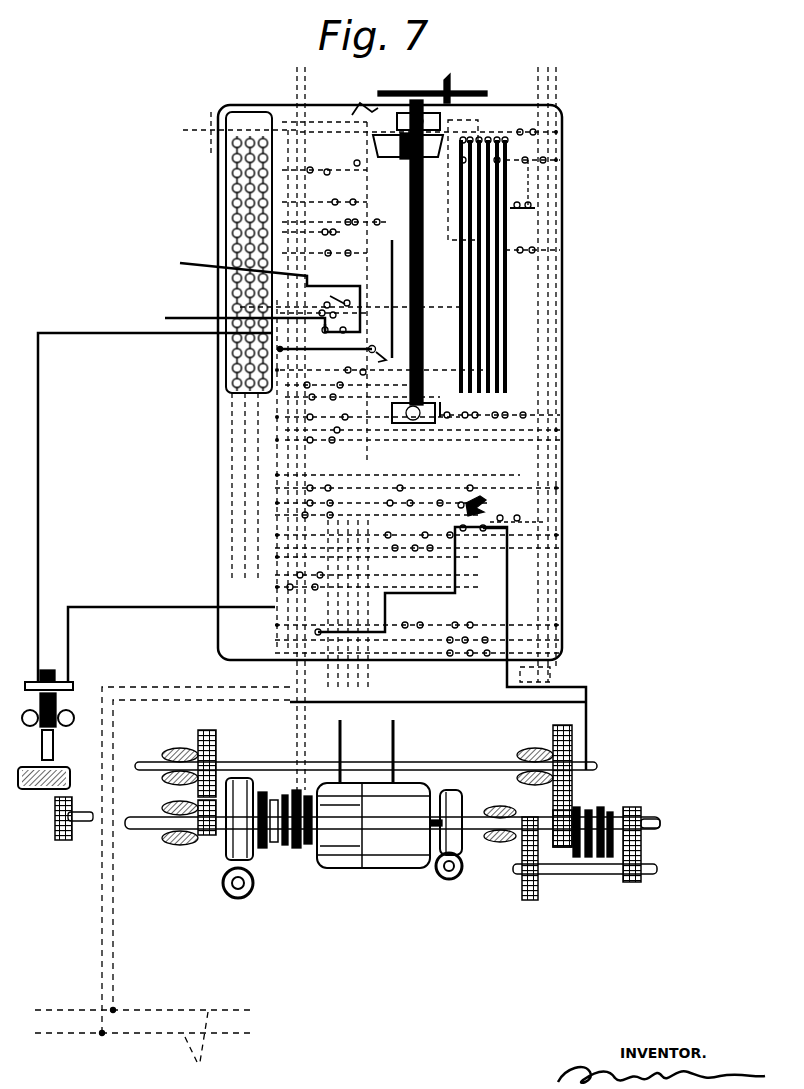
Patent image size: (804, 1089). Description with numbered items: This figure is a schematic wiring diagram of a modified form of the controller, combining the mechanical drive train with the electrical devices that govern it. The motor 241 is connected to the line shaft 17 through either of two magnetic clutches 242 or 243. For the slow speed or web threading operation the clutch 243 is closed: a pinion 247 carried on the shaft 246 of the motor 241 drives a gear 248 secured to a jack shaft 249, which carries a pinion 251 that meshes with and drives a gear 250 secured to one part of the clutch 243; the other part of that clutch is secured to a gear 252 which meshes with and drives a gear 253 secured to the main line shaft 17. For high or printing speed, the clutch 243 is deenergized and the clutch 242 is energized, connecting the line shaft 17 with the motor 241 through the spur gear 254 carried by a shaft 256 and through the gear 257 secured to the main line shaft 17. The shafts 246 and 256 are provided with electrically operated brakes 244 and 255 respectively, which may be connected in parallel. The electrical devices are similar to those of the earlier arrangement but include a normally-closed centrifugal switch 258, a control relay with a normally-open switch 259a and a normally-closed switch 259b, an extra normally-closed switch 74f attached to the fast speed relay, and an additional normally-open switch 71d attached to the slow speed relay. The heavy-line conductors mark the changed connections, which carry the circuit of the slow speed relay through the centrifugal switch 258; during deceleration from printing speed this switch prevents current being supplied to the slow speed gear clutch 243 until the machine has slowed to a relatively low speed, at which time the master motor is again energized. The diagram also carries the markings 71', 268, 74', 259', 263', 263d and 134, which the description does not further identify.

The relay coil 71' is at (220, 252).
The relay 268 is at (249, 292).
The relay contact 74' is at (261, 294).
The normally-closed switch 74f is at (239, 321).
The switch contact 259' is at (252, 371).
The normally-open switch 259a is at (584, 188).
The normally-closed switch 259b is at (463, 425).
The switch arm 263' is at (554, 487).
The normally-open switch 71d is at (495, 522).
The switch contact 263d is at (473, 532).
The centrifugal switch 258 is at (60, 708).
The line shaft 17 is at (490, 768).
The gear 257 is at (215, 778).
The shaft 256 is at (177, 822).
The spur gear 254 is at (210, 834).
The brake 255 is at (222, 862).
The magnetic clutch 242 is at (258, 852).
The motor 241 is at (405, 826).
The brake 244 is at (438, 846).
The shaft 246 is at (493, 843).
The pinion 247 is at (518, 842).
The gear 248 is at (530, 900).
The gear 253 is at (570, 748).
The gear 252 is at (557, 840).
The jack shaft 249 is at (580, 870).
The gear 250 is at (640, 812).
The magnetic clutch 243 is at (598, 858).
The pinion 251 is at (635, 880).
The conduit 134 is at (190, 1046).